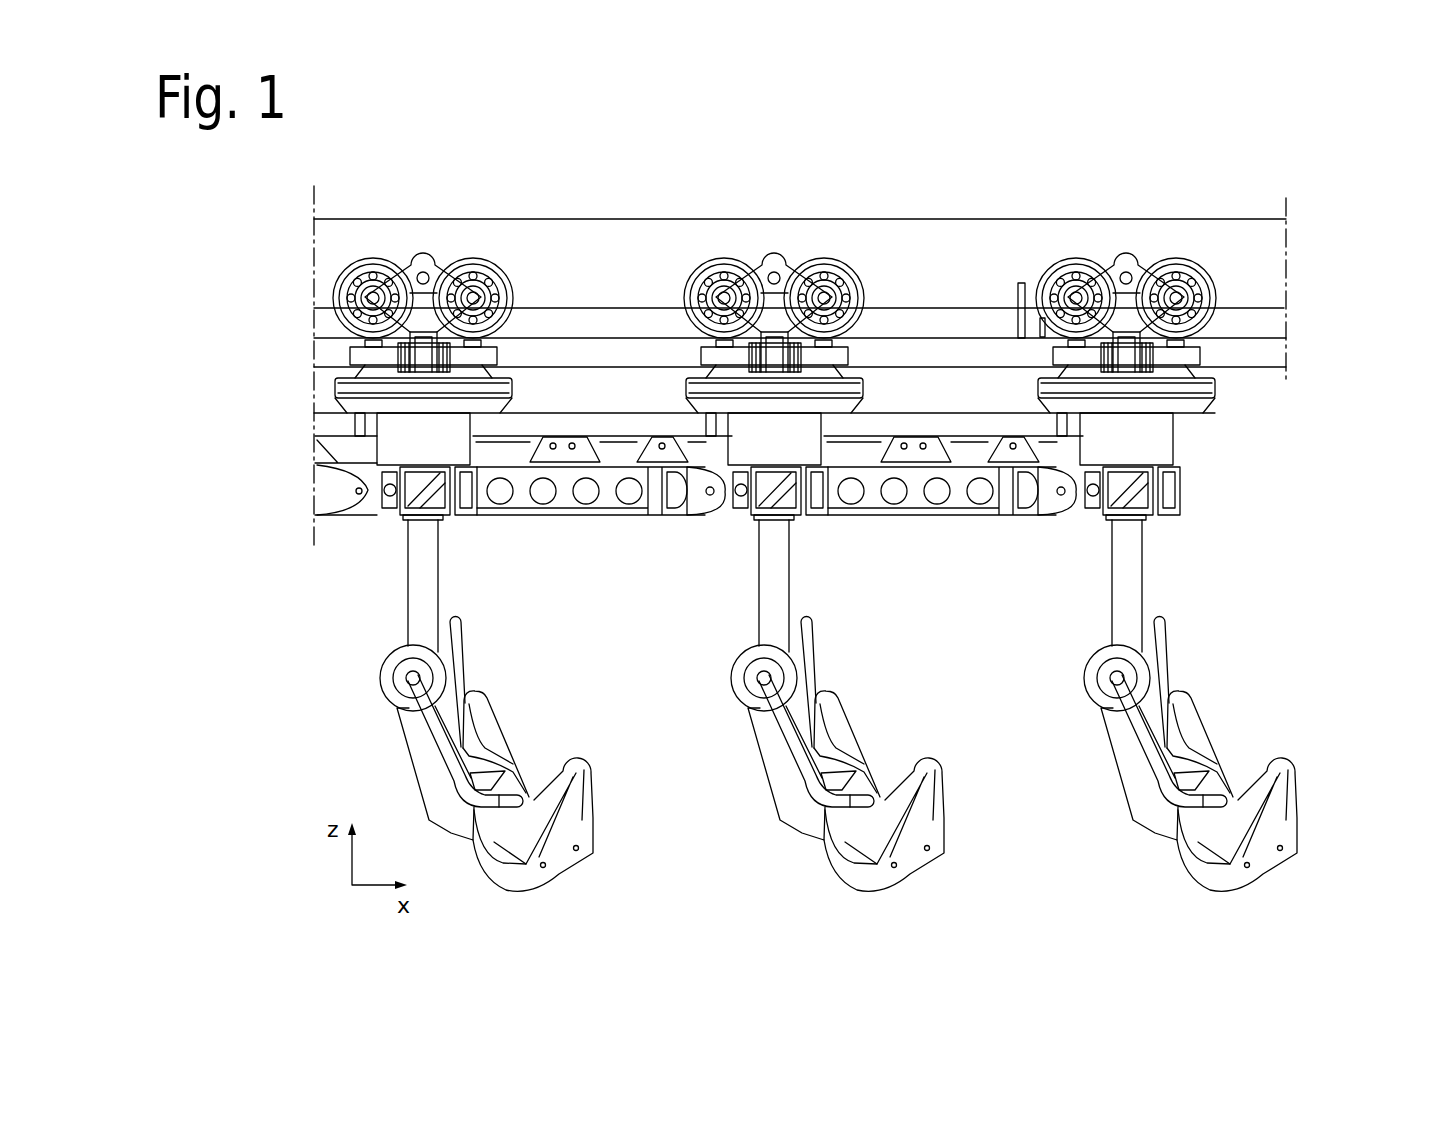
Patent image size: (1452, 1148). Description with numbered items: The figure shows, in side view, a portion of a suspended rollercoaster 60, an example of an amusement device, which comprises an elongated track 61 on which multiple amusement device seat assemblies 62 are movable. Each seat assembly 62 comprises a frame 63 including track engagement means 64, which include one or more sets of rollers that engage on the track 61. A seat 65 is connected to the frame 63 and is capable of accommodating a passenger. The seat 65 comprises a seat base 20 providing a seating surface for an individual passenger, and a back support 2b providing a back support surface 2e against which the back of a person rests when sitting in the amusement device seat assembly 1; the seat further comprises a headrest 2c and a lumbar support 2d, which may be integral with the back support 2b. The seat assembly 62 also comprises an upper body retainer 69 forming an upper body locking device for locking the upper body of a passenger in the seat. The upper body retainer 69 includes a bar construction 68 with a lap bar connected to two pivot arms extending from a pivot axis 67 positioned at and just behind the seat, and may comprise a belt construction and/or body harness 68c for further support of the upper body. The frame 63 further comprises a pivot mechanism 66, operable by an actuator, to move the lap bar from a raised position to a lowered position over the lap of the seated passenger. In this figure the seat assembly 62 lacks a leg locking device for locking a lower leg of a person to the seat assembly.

The amusement device seat assembly 1 is at (360, 692).
The suspended rollercoaster 60 is at (1308, 281).
The elongated track 61 is at (932, 284).
The amusement device seat assembly 62 is at (877, 720).
The frame 63 is at (772, 548).
The track engagement means 64 is at (1113, 443).
The seat 65 is at (853, 875).
The pivot mechanism 66 is at (758, 667).
The pivot axis 67 is at (757, 703).
The bar construction 68 is at (797, 760).
The body harness 68c is at (867, 760).
The upper body retainer 69 is at (840, 688).
The back support 2b is at (1163, 843).
The headrest 2c is at (1162, 643).
The lumbar support 2d is at (1210, 773).
The back support surface 2e is at (1195, 743).
The seat base 20 is at (1268, 862).